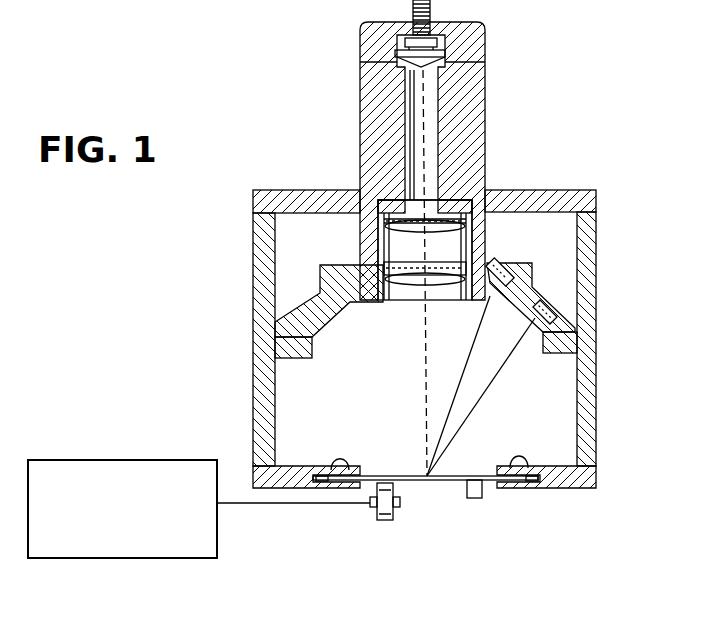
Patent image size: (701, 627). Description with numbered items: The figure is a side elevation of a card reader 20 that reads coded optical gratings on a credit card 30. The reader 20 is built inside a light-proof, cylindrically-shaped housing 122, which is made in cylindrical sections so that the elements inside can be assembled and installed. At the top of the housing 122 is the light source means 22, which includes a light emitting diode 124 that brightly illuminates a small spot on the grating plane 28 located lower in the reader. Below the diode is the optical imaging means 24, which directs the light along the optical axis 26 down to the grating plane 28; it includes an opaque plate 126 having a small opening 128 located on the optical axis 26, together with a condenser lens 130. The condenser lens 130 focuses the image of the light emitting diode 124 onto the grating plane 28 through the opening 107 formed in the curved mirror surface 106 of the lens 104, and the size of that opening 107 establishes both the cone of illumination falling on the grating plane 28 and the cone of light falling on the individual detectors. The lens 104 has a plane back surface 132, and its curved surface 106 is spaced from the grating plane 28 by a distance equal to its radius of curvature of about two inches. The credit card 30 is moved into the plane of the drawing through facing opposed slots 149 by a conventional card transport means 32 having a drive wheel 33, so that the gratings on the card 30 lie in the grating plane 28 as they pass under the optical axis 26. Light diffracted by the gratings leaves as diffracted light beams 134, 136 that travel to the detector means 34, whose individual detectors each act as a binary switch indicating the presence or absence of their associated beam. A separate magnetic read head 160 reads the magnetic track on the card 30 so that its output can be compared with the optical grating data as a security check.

The card reader 20 is at (241, 66).
The light source means 22 is at (453, 52).
The light emitting diode 124 is at (398, 50).
The housing 122 is at (371, 99).
The small opening 128 is at (432, 202).
The optical imaging means 24 is at (391, 199).
The opaque plate 126 is at (461, 199).
The opening in mirror surface 107 is at (413, 260).
The plane back surface 132 is at (420, 234).
The condenser lens 130 is at (470, 244).
The detector means 34 is at (549, 282).
The mirror surface 106 is at (392, 302).
The lens 104 is at (447, 275).
The optical axis 26 is at (425, 397).
The grating plane 28 is at (396, 470).
The diffracted light beam 134 is at (470, 372).
The diffracted light beam 136 is at (480, 403).
The card transport means 32 is at (100, 458).
The slots 149 is at (337, 472).
The drive wheel 33 is at (380, 522).
The credit card 30 is at (438, 482).
The magnetic read head 160 is at (486, 498).